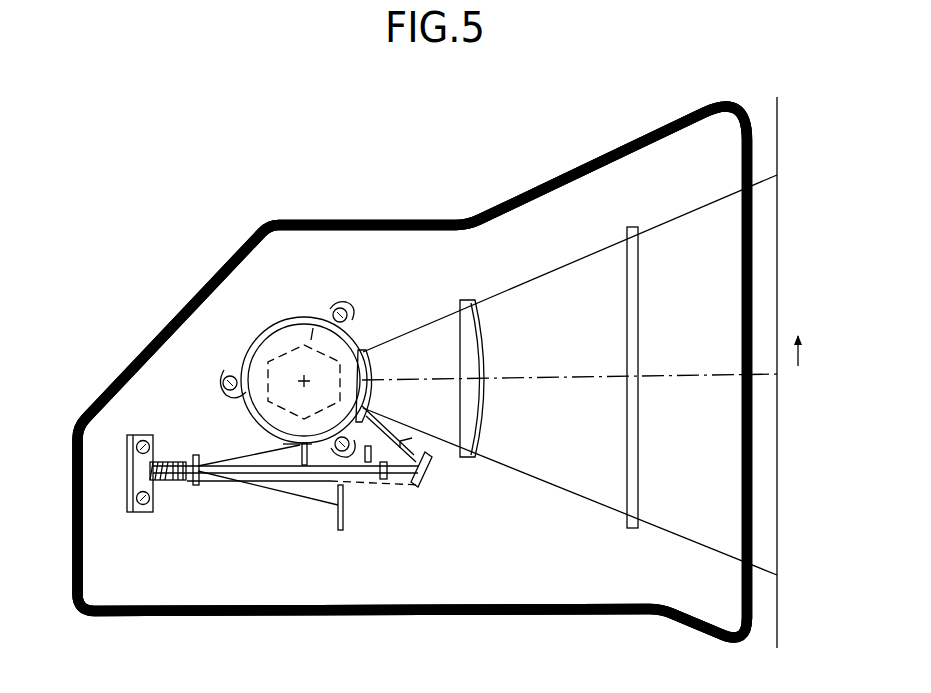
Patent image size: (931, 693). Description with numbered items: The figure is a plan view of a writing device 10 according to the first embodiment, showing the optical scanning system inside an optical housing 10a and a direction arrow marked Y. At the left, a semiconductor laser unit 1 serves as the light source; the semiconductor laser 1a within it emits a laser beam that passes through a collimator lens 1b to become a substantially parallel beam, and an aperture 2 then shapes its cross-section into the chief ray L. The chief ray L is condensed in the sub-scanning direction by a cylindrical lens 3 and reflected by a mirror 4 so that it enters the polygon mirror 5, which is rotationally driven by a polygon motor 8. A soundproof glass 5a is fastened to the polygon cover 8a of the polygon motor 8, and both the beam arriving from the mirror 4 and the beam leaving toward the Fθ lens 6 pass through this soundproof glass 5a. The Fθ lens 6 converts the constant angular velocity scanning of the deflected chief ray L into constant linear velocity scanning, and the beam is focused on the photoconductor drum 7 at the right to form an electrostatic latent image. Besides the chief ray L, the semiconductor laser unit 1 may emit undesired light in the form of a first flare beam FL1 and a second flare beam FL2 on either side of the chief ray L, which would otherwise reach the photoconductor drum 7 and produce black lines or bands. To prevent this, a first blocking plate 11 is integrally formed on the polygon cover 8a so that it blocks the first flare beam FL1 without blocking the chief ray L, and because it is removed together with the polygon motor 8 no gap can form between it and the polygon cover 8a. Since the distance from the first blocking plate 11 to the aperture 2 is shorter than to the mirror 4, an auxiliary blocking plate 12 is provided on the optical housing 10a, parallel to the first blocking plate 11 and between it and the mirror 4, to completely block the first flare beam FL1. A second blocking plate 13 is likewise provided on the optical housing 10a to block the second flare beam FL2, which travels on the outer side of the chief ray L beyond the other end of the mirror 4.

The semiconductor laser unit 1 is at (140, 515).
The semiconductor laser 1a is at (156, 474).
The collimator lens 1b is at (128, 437).
The aperture 2 is at (196, 456).
The cylindrical lens 3 is at (388, 480).
The mirror 4 is at (418, 488).
The polygon mirror 5 is at (318, 318).
The soundproof glass 5a is at (363, 352).
The Fθ lens 6 is at (462, 300).
The photoconductor drum 7 is at (772, 113).
The polygon motor 8 is at (246, 337).
The polygon cover 8a is at (290, 437).
The writing device 10 is at (254, 216).
The optical housing 10a is at (523, 547).
The first blocking plate 11 is at (304, 466).
The auxiliary blocking plate 12 is at (370, 463).
The second blocking plate 13 is at (338, 528).
The first flare beam FL1 is at (246, 456).
The second flare beam FL2 is at (248, 488).
The chief ray L is at (472, 397).
The Y axis direction Y is at (808, 348).